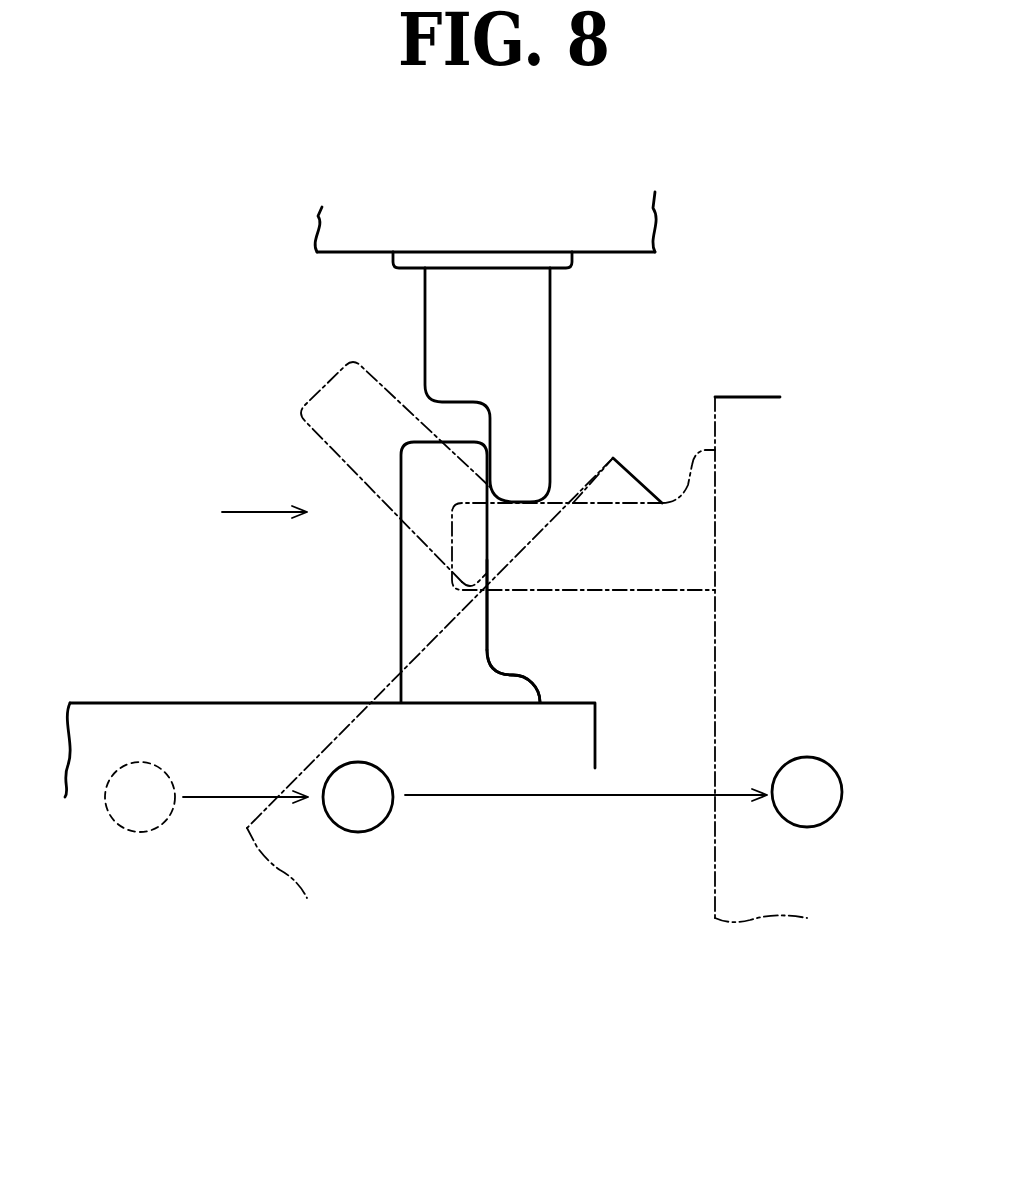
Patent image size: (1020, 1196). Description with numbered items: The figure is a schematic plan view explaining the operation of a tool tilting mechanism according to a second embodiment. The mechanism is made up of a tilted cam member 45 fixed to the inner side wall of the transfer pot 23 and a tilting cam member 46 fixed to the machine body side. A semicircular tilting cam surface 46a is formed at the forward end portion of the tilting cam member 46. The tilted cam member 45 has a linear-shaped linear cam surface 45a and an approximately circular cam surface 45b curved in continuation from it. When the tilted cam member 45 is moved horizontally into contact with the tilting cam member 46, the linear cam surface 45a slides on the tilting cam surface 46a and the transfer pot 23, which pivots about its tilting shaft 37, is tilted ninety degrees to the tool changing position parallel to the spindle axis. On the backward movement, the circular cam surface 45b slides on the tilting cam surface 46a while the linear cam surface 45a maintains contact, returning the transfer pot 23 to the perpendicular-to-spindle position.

The transfer pot 23 is at (193, 699).
The tilting shaft 37 is at (163, 820).
The tilted cam member 45 is at (397, 590).
The linear cam surface 45a is at (488, 612).
The circular cam surface 45b is at (512, 677).
The tilting cam member 46 is at (553, 366).
The tilting cam surface 46a is at (550, 490).